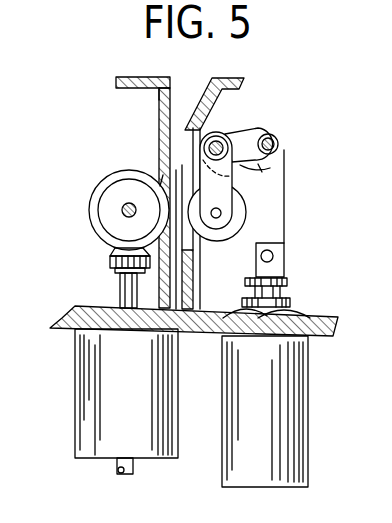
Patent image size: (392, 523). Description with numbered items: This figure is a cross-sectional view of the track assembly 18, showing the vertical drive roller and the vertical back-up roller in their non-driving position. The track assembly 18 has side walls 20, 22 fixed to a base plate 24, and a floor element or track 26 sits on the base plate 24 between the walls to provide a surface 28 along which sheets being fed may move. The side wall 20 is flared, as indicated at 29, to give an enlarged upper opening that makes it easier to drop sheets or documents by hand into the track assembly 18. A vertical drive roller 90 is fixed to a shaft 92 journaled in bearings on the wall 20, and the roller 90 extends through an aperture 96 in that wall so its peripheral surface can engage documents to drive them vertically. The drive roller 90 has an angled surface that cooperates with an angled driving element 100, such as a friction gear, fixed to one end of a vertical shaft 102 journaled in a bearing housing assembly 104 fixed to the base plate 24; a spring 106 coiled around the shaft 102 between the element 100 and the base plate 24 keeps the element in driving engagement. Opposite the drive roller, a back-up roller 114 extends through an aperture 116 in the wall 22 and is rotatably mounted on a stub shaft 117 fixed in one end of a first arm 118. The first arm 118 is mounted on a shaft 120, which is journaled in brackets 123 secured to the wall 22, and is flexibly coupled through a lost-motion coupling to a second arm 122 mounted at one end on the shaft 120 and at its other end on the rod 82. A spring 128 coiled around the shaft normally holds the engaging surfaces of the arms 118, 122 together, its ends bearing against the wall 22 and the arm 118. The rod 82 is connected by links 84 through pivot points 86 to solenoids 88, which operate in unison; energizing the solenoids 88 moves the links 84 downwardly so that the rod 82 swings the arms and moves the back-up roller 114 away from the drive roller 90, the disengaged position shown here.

The track assembly 18 is at (128, 64).
The side wall 20 is at (159, 126).
The side wall 22 is at (222, 116).
The base plate 24 is at (55, 322).
The floor element or track 26 is at (291, 306).
The surface 28 is at (196, 283).
The flared portion 29 is at (164, 98).
The rod 82 is at (279, 144).
The link 84 is at (277, 240).
The pivot point 86 is at (279, 262).
The solenoid 88 is at (300, 432).
The vertical drive roller 90 is at (90, 218).
The shaft 92 is at (123, 209).
The aperture 96 is at (160, 168).
The angled driving element 100 is at (111, 262).
The vertical shaft 102 is at (118, 467).
The bearing housing assembly 104 is at (83, 388).
The spring 106 is at (137, 286).
The back-up roller 114 is at (233, 203).
The aperture 116 is at (163, 178).
The stub shaft 117 is at (216, 218).
The first arm 118 is at (239, 186).
The shaft 120 is at (241, 168).
The second arm 122 is at (233, 160).
The bracket 123 is at (220, 134).
The spring 128 is at (259, 128).